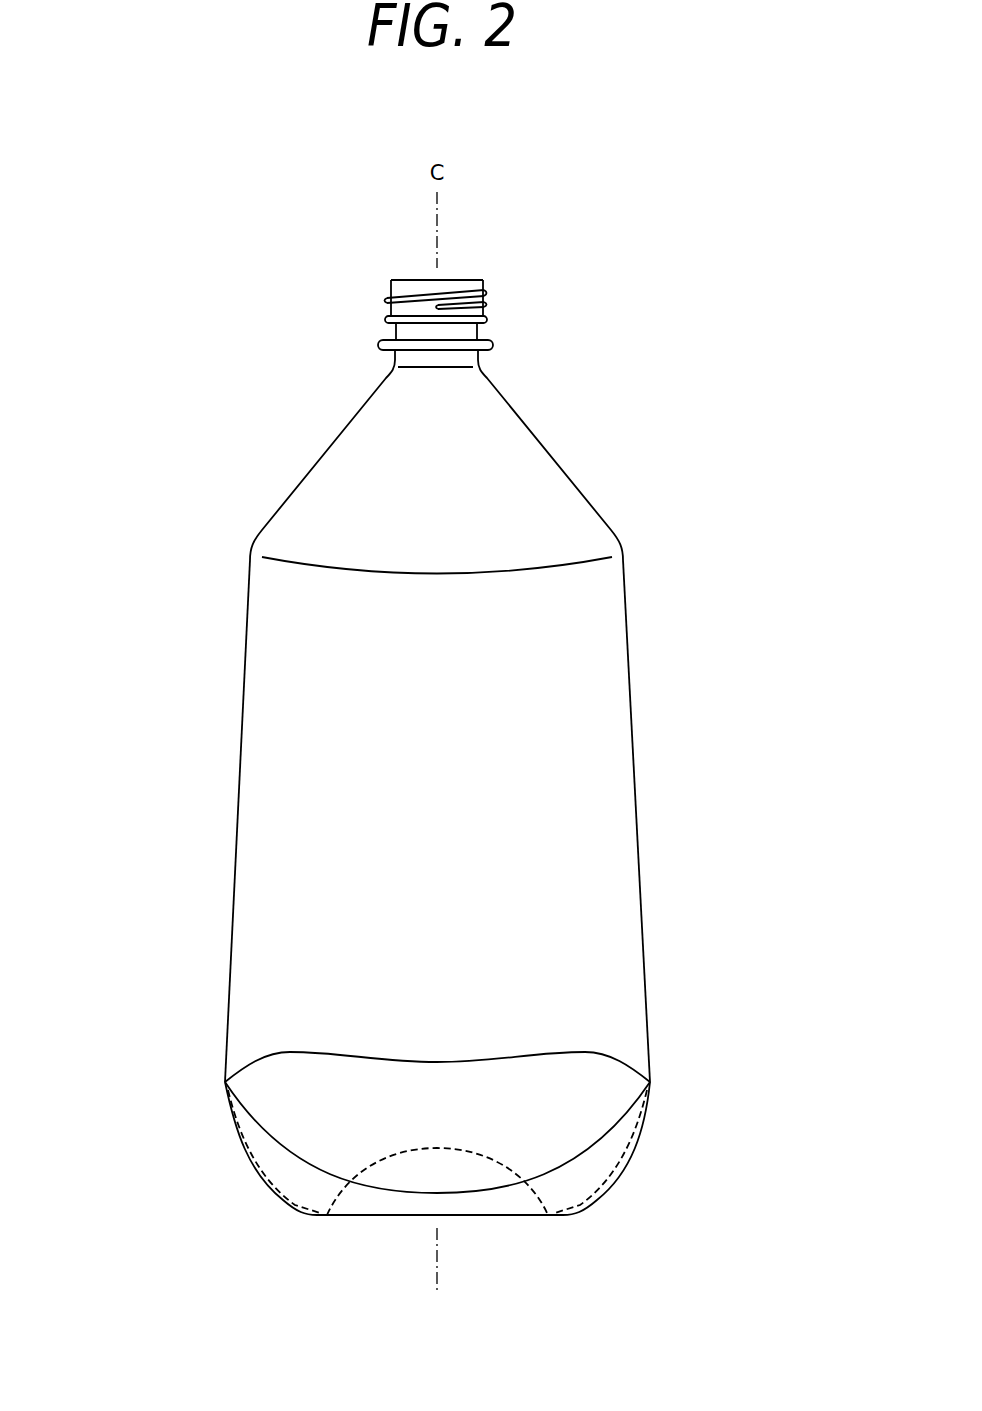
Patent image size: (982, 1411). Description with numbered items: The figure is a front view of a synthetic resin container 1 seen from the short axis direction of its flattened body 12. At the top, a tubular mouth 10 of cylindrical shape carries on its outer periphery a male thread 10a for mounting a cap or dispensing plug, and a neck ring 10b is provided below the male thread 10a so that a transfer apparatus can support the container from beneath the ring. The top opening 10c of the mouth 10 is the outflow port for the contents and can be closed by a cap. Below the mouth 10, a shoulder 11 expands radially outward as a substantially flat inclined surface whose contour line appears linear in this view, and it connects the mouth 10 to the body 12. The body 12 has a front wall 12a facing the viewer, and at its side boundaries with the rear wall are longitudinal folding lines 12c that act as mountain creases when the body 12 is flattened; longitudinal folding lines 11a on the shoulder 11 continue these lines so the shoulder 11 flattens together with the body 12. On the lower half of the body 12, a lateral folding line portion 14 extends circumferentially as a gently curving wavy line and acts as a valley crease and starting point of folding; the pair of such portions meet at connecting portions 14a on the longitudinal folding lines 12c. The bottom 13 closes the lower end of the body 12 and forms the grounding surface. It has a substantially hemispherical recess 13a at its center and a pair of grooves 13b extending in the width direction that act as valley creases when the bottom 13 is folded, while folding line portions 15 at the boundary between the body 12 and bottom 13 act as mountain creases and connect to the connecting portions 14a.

The synthetic resin container 1 is at (645, 292).
The mouth 10 is at (483, 331).
The male thread 10a is at (487, 293).
The neck ring 10b is at (493, 344).
The top opening 10c is at (463, 279).
The shoulder 11 is at (559, 462).
The longitudinal folding line 11a is at (309, 470).
The body 12 is at (636, 730).
The front wall 12a is at (305, 778).
The longitudinal folding line 12c is at (232, 897).
The bottom 13 is at (569, 1218).
The recess 13a is at (384, 1165).
The groove 13b is at (627, 1167).
The lateral folding line portion 14 is at (282, 1052).
The connecting portion 14a is at (225, 1082).
The folding line portion 15 is at (268, 1148).